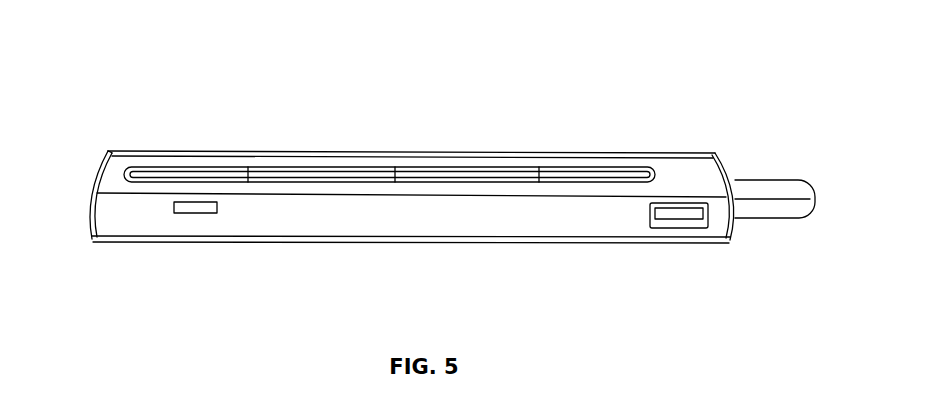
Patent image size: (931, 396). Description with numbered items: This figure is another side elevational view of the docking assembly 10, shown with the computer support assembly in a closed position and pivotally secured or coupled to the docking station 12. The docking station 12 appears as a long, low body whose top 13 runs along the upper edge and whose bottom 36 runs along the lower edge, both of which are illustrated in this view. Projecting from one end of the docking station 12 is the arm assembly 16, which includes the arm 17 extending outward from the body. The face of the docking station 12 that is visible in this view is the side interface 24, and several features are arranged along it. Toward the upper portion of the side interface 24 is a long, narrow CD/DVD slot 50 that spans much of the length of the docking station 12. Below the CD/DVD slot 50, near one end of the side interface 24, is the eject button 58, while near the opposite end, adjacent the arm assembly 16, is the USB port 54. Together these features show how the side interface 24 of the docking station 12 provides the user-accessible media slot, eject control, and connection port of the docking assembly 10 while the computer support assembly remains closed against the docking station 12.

The docking assembly 10 is at (127, 98).
The docking station 12 is at (364, 149).
The top 13 is at (258, 150).
The arm assembly 16 is at (777, 226).
The arm 17 is at (797, 190).
The side interface 24 is at (493, 259).
The bottom 36 is at (587, 244).
The CD/DVD slot 50 is at (550, 172).
The USB port 54 is at (678, 219).
The eject button 58 is at (198, 213).